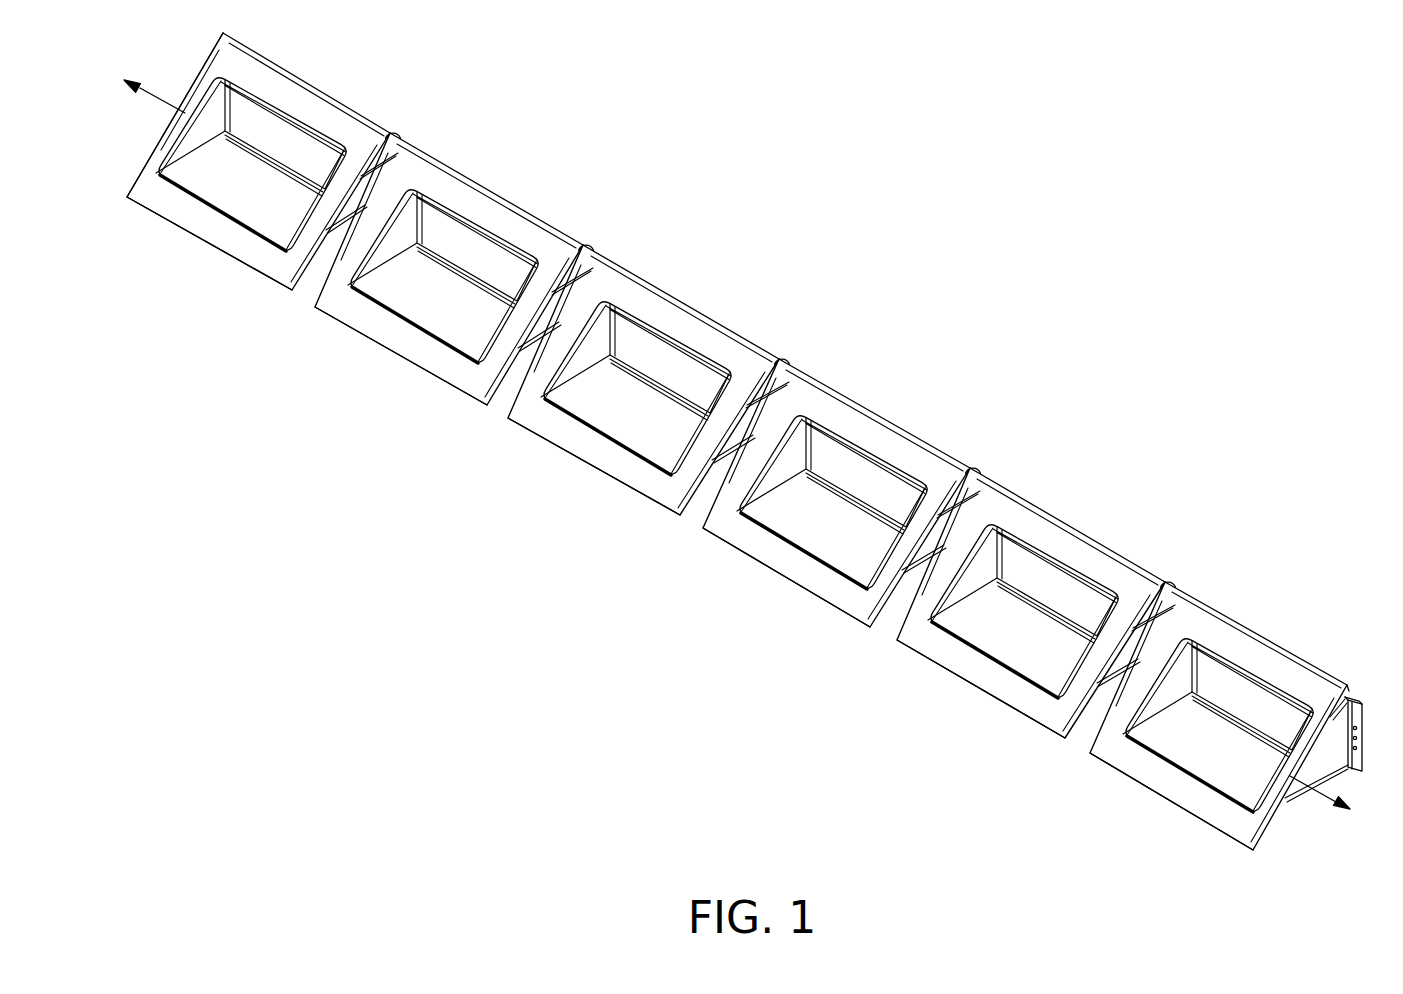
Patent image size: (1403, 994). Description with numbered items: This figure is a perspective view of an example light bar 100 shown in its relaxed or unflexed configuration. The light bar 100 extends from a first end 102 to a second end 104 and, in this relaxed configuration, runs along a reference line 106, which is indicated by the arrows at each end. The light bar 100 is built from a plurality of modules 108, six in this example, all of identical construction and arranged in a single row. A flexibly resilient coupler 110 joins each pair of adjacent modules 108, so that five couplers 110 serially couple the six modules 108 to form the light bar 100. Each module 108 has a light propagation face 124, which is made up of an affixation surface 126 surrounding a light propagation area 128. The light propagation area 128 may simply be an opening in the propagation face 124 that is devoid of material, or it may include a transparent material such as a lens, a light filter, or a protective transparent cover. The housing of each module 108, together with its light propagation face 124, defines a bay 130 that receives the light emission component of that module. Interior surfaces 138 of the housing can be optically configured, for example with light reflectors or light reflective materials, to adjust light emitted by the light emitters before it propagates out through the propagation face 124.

The light bar 100 is at (809, 104).
The first end 102 is at (1262, 838).
The second end 104 is at (153, 153).
The reference line 106 is at (153, 90).
The module 108 is at (317, 113).
The flexibly resilient coupler 110 is at (393, 140).
The light propagation face 124 is at (175, 212).
The affixation surface 126 is at (632, 468).
The light propagation area 128 is at (703, 357).
The bay 130 is at (258, 120).
The interior surfaces 138 is at (401, 227).